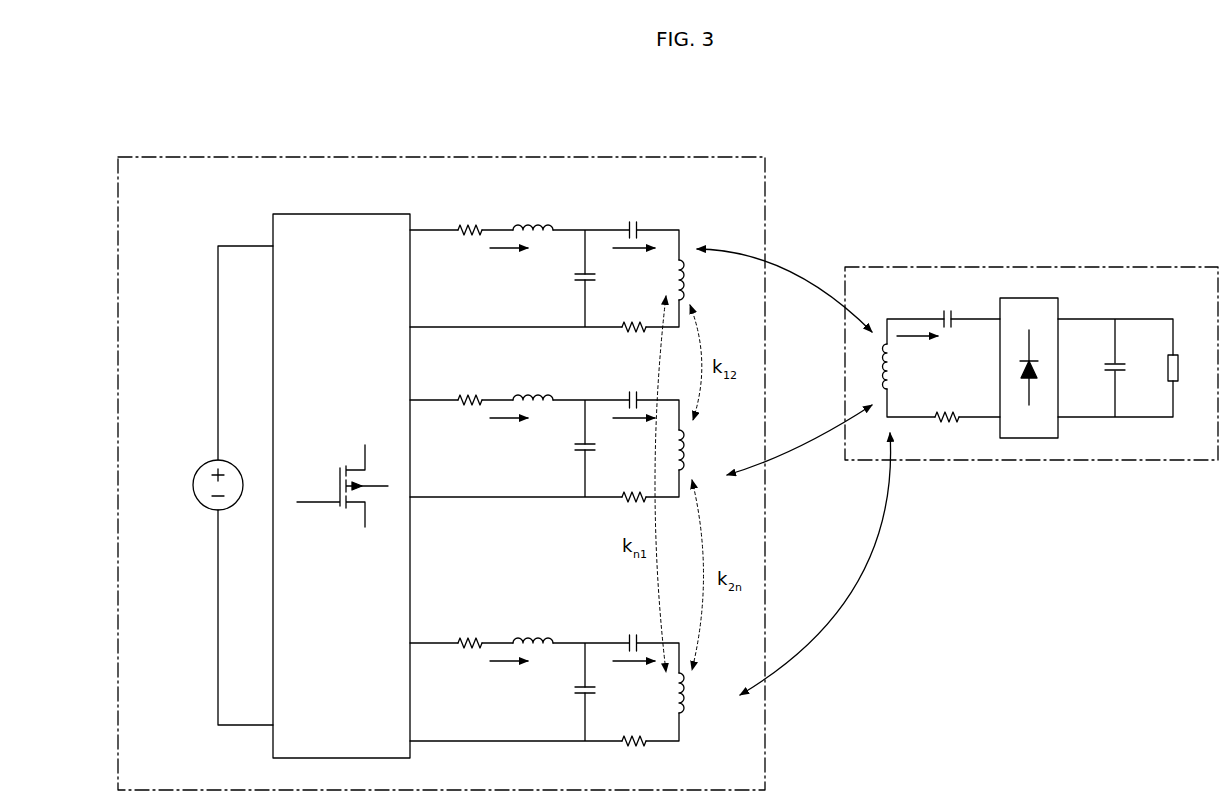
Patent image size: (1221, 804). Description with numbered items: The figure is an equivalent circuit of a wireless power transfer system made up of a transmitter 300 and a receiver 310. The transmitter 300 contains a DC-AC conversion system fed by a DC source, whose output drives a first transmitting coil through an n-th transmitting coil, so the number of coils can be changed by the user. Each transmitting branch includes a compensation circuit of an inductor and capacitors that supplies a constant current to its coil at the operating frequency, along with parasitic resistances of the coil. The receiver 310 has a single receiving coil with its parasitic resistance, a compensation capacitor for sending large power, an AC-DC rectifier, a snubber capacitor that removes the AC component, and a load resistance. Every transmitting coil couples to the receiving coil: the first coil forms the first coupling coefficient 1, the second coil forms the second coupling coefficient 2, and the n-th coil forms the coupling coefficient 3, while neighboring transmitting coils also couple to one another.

The transmitter 300 is at (703, 157).
The receiver 310 is at (1150, 267).
The first coupling coefficient k1 1 is at (784, 288).
The second coupling coefficient k2 2 is at (799, 447).
The coupling coefficient k3 3 is at (815, 564).